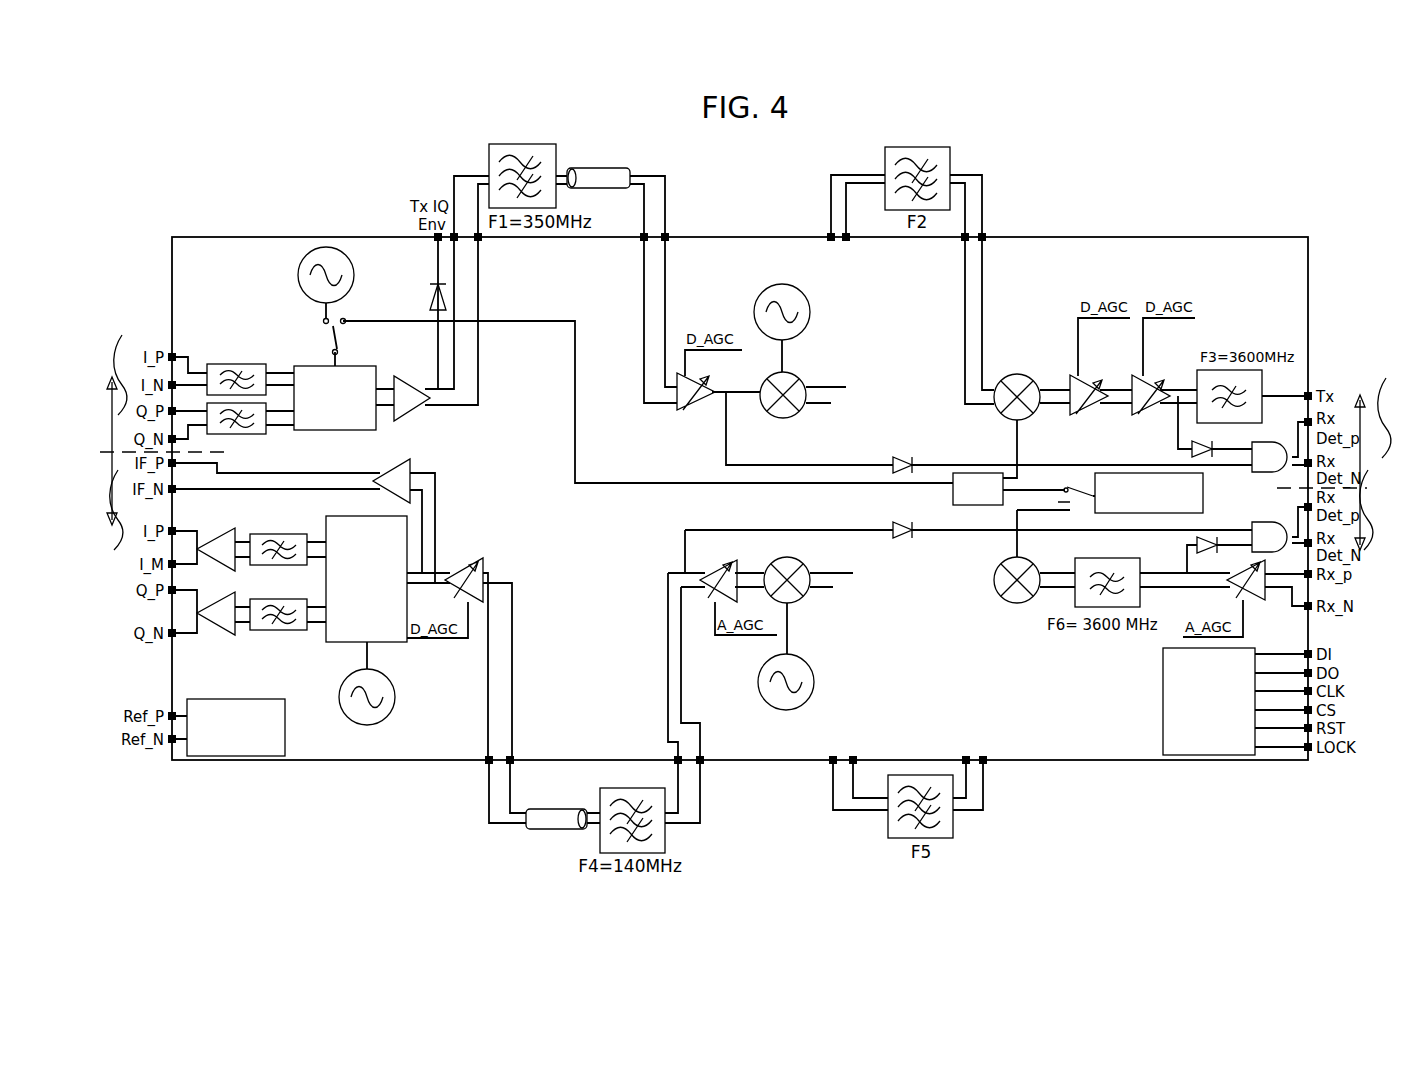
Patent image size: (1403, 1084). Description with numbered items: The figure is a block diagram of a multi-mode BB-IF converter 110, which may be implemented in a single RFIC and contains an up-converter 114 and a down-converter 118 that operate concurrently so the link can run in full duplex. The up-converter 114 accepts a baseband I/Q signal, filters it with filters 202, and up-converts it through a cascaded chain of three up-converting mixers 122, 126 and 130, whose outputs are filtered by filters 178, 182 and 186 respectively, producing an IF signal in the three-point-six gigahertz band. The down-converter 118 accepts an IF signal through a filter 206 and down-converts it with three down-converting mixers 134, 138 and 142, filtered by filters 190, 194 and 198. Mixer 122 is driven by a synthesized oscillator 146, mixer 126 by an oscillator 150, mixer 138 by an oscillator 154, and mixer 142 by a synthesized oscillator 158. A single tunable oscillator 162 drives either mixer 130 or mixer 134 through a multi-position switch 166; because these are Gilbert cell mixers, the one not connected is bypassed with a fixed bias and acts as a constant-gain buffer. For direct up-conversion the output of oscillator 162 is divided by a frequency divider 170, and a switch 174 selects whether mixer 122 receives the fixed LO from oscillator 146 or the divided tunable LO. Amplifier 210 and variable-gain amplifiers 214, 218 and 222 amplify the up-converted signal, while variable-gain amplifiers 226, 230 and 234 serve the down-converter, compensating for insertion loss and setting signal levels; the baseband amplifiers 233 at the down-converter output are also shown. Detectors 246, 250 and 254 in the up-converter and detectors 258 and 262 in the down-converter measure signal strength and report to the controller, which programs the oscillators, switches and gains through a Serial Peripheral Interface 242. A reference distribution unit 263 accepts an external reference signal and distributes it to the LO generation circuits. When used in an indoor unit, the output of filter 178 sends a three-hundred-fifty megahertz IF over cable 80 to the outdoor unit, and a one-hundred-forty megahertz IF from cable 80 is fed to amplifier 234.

The cable 80 is at (577, 168).
The multi-mode BB-IF converter 110 is at (1155, 218).
The up-converter 114 is at (752, 430).
The down-converter 118 is at (746, 527).
The up-converting mixer 122 is at (310, 366).
The up-converting mixer 126 is at (800, 414).
The up-converting mixer 130 is at (1008, 418).
The down-converting mixer 134 is at (1006, 566).
The down-converting mixer 138 is at (803, 562).
The down-converting mixer 142 is at (398, 642).
The synthesized oscillator 146 is at (298, 283).
The oscillator 150 is at (754, 312).
The oscillator 154 is at (767, 702).
The synthesized oscillator 158 is at (395, 705).
The tunable oscillator 162 is at (1203, 493).
The multi-position switch 166 is at (1074, 488).
The frequency divider 170 is at (980, 506).
The switch 174 is at (339, 328).
The filter 178 is at (489, 162).
The filter 182 is at (885, 162).
The filter 186 is at (1247, 378).
The filter 190 is at (888, 832).
The filter 194 is at (665, 841).
The filters 198 is at (294, 590).
The filters 202 is at (248, 364).
The filter 206 is at (1092, 562).
The amplifier 210 is at (414, 412).
The variable-gain amplifier 214 is at (706, 407).
The variable-gain amplifier 218 is at (1083, 378).
The variable-gain amplifier 222 is at (1148, 378).
The variable-gain amplifier 226 is at (1237, 592).
The variable-gain amplifier 230 is at (718, 605).
The baseband amplifiers 233 is at (238, 586).
The variable-gain amplifier 234 is at (490, 556).
The Serial Peripheral Interface 242 is at (1165, 715).
The detector 246 is at (450, 298).
The detector 250 is at (903, 460).
The detector 254 is at (1188, 459).
The detector 258 is at (1203, 544).
The detector 262 is at (908, 535).
The reference distribution unit 263 is at (243, 699).